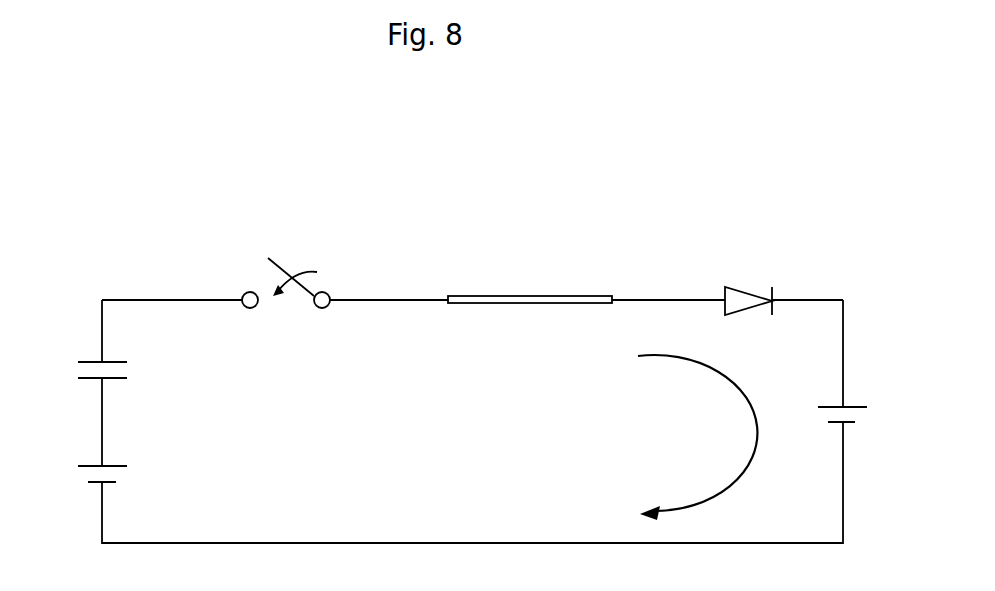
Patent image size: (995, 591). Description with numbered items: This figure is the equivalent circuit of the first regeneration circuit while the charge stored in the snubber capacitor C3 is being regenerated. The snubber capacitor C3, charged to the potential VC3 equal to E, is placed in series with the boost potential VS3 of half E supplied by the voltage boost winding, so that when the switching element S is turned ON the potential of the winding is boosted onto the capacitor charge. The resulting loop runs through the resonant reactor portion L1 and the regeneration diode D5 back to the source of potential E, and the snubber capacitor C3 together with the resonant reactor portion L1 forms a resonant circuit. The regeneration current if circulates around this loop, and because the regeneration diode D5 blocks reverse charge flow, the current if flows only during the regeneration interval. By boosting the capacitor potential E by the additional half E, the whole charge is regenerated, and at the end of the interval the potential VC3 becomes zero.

The snubber capacitor C3 is at (73, 363).
The snubber capacitor potential VC3 is at (152, 364).
The voltage boost winding potential VS3 is at (167, 466).
The switching element S is at (286, 259).
The resonant reactor portion L1 is at (530, 273).
The regeneration diode D5 is at (748, 273).
The charged potential E is at (857, 408).
The regeneration current if is at (703, 437).